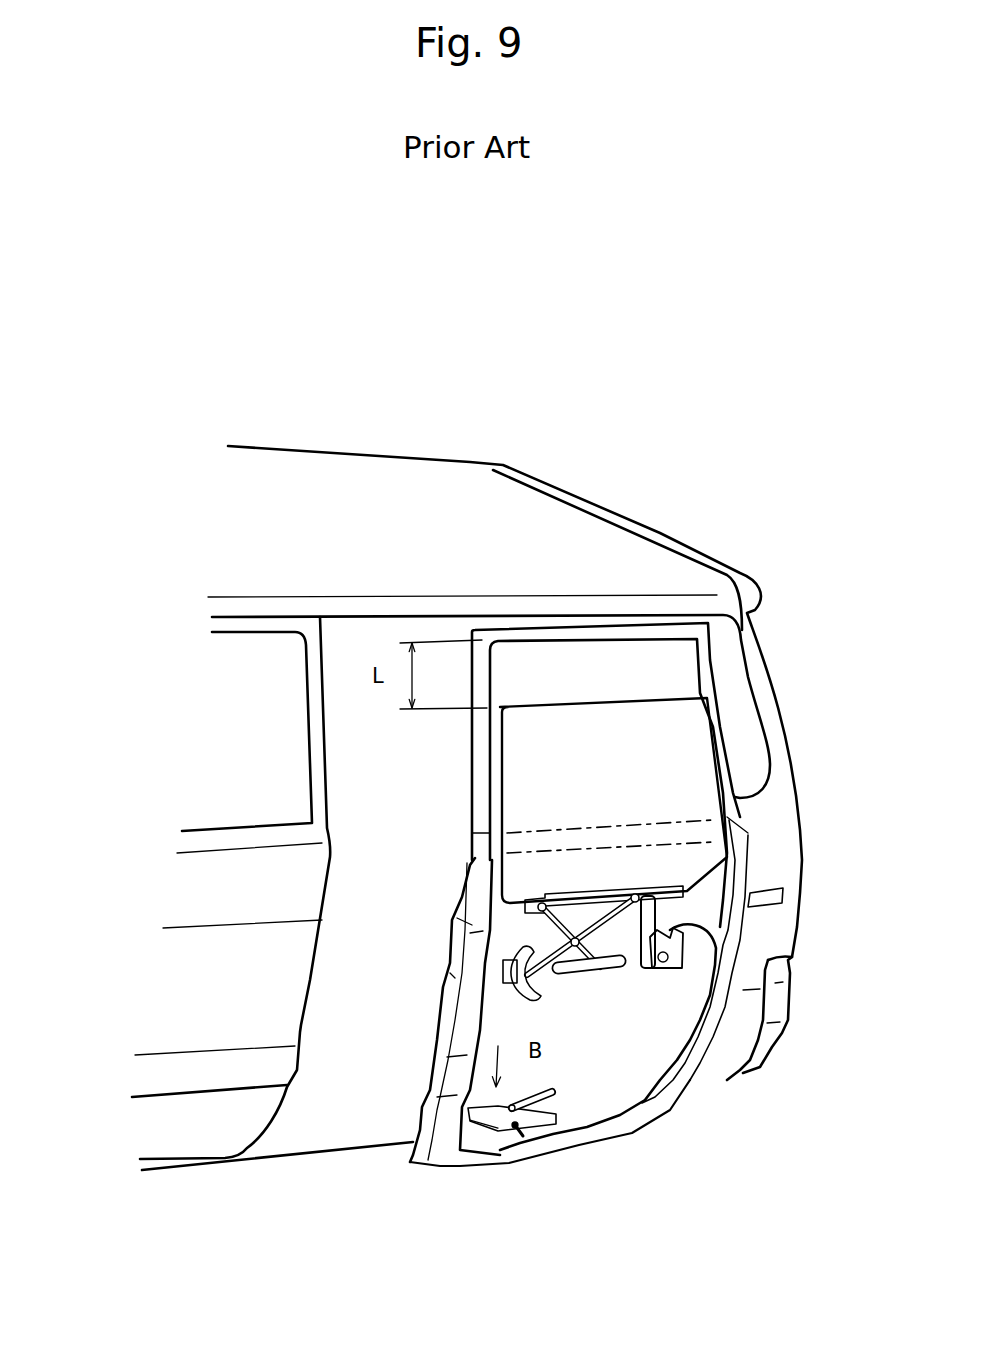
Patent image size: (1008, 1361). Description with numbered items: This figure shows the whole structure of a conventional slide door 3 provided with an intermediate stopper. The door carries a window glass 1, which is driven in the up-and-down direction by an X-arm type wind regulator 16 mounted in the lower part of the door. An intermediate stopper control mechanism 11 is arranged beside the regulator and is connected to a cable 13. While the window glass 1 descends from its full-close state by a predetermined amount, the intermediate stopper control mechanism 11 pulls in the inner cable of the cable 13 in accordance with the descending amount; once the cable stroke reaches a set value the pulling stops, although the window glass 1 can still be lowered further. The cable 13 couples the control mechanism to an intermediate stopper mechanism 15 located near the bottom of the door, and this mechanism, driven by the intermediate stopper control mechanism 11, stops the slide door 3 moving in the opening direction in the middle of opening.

The window glass 1 is at (690, 722).
The slide door 3 is at (630, 1055).
The intermediate stopper control mechanism 11 is at (709, 909).
The cable 13 is at (717, 930).
The intermediate stopper mechanism 15 is at (579, 1108).
The X-arm type wind regulator 16 is at (630, 989).